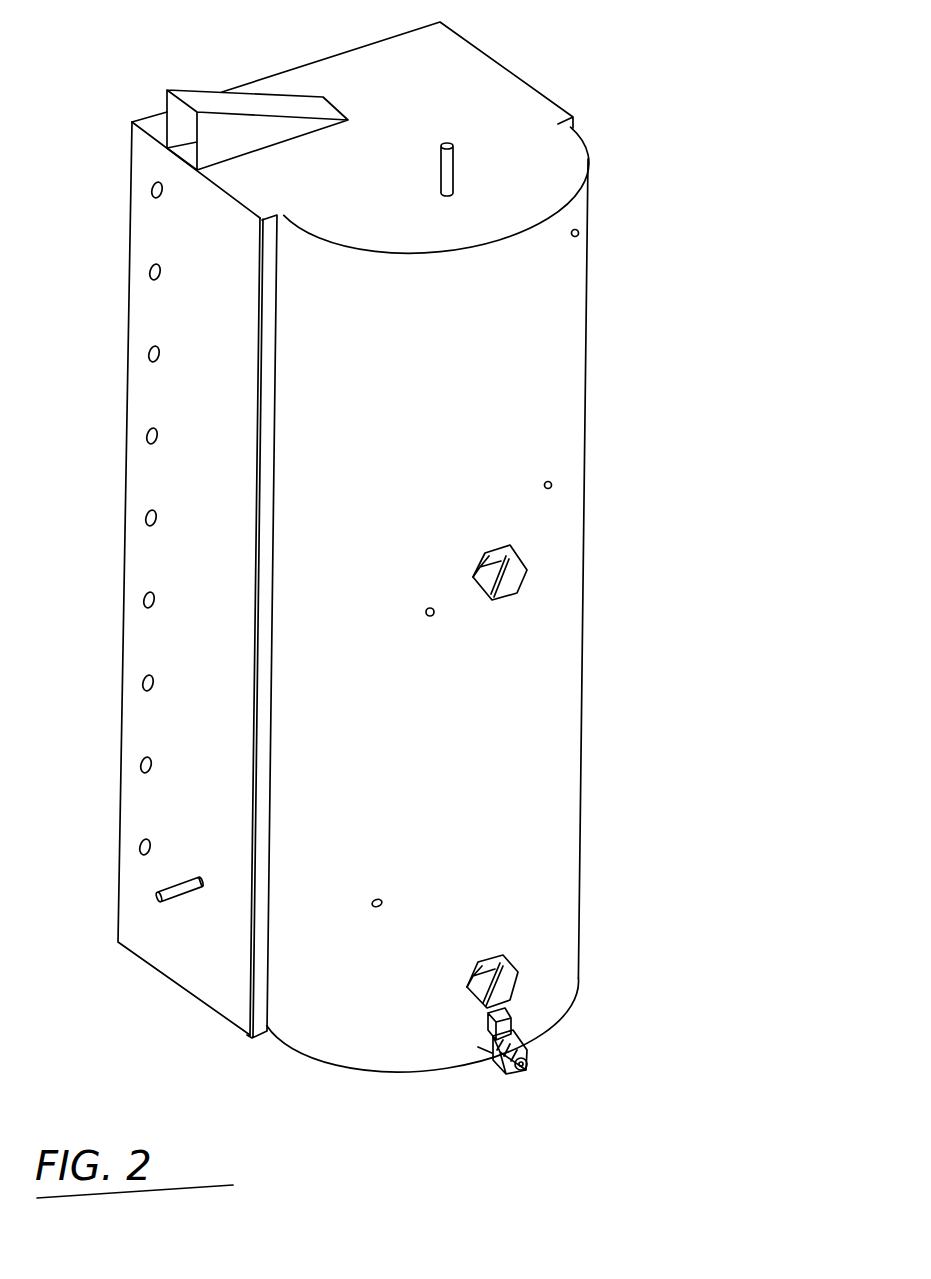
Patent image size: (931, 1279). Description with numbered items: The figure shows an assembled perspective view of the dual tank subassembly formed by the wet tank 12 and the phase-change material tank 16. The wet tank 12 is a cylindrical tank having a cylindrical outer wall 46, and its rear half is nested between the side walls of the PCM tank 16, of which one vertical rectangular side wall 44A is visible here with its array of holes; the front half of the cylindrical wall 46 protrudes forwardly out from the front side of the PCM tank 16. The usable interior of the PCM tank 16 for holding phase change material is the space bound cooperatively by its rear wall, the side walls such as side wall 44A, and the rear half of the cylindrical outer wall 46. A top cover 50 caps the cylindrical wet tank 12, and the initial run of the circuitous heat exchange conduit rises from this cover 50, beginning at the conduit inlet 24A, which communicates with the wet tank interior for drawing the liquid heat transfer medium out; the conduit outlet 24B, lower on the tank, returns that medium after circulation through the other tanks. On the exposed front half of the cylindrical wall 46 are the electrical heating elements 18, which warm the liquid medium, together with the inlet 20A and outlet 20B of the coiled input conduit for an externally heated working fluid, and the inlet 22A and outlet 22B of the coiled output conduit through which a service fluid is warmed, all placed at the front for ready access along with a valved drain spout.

The wet tank 12 is at (543, 402).
The phase-change material tank 16 is at (174, 627).
The electrical heating element 18 is at (508, 580).
The inlet of coiled input conduit 20A is at (433, 617).
The outlet of coiled input conduit 20B is at (378, 908).
The inlet of coiled output conduit 22A is at (580, 232).
The outlet of coiled output conduit 22B is at (553, 483).
The inlet of circuitous heat exchange conduit 24A is at (440, 163).
The outlet of circuitous heat exchange conduit 24B is at (173, 900).
The PCM tank side wall 44A is at (225, 492).
The cylindrical outer wall 46 is at (560, 667).
The top cover 50 is at (437, 125).